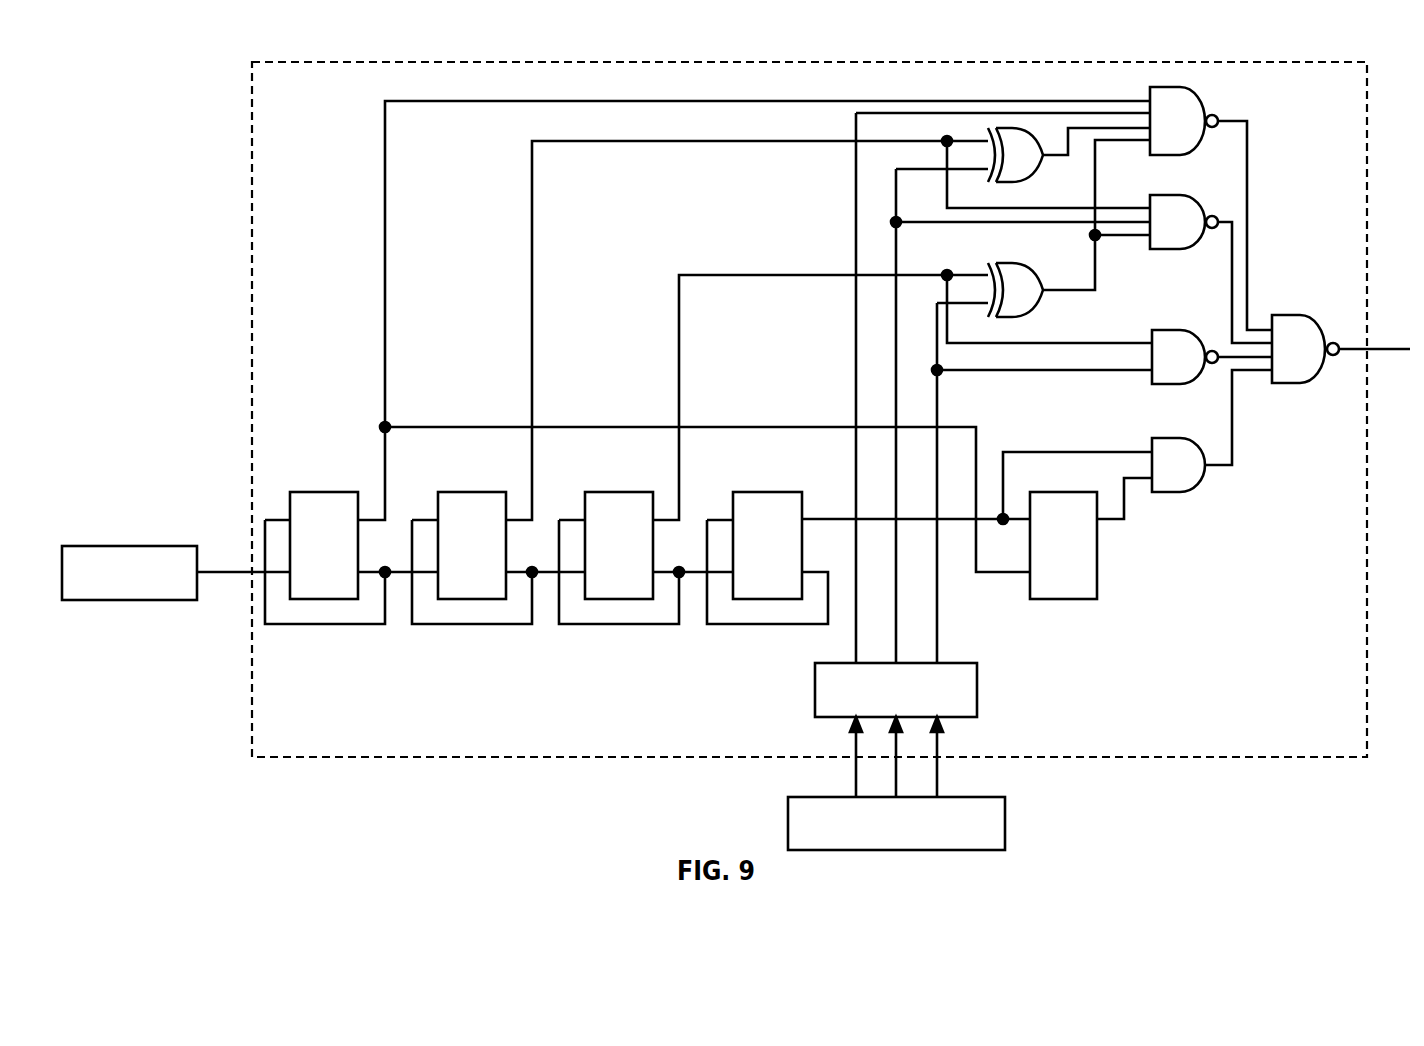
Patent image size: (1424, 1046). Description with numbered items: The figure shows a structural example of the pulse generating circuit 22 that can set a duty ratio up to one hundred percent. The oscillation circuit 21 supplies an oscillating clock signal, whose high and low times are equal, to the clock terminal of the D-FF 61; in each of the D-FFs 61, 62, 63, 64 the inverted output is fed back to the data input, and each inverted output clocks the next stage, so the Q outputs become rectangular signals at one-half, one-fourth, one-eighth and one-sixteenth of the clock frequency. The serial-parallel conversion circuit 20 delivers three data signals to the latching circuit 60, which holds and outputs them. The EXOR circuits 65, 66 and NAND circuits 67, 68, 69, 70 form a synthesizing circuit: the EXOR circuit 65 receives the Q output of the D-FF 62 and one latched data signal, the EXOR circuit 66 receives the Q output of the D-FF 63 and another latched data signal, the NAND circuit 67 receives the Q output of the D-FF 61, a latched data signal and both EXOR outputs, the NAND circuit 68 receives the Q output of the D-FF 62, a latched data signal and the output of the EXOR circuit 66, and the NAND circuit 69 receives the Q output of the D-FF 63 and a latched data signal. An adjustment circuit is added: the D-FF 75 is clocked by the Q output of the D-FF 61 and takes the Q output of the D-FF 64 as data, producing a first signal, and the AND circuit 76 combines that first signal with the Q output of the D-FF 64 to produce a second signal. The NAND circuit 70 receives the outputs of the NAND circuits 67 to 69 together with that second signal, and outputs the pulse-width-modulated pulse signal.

The serial-parallel conversion circuit 20 is at (1005, 825).
The oscillation circuit 21 is at (137, 600).
The pulse generating circuit 22 is at (493, 757).
The latching circuit 60 is at (977, 690).
The D-FF 61 is at (318, 492).
The D-FF 62 is at (466, 492).
The D-FF 63 is at (613, 492).
The D-FF 64 is at (761, 492).
The EXOR circuit 65 is at (1030, 180).
The EXOR circuit 66 is at (1030, 315).
The NAND circuit 67 is at (1168, 155).
The NAND circuit 68 is at (1168, 249).
The NAND circuit 69 is at (1168, 384).
The NAND circuit 70 is at (1290, 383).
The D-FF 75 is at (1097, 598).
The AND circuit 76 is at (1168, 492).